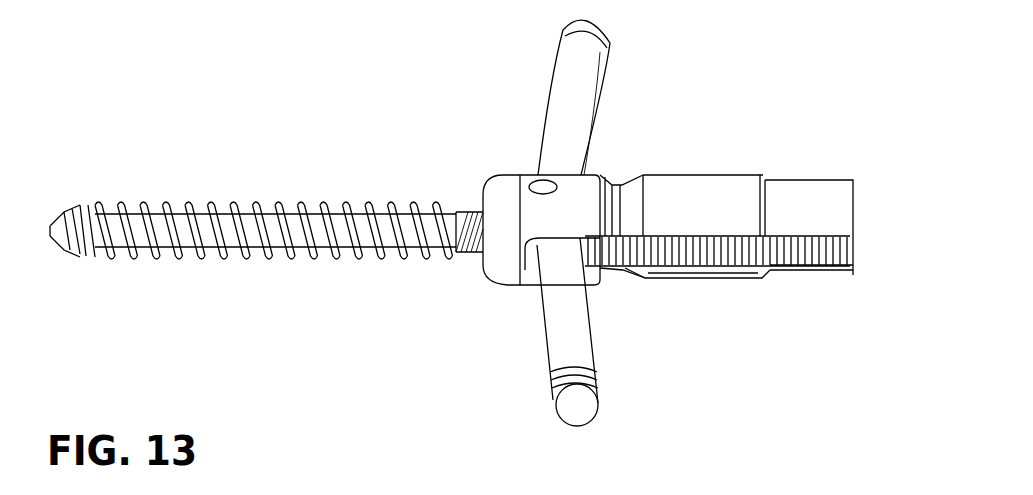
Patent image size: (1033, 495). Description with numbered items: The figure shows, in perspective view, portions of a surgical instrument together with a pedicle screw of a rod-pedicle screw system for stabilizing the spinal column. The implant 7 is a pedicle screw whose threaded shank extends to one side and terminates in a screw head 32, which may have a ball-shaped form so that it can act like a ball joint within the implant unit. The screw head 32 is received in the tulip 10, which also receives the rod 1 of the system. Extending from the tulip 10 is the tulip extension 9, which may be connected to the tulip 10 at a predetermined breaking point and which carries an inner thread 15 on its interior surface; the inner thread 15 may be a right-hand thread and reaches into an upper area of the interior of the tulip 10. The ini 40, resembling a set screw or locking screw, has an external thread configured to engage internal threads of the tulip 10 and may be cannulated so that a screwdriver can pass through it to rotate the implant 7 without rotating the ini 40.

The rod 1 is at (583, 80).
The implant 7 is at (255, 193).
The tulip extension 9 is at (683, 195).
The tulip 10 is at (504, 290).
The inner thread 15 is at (806, 270).
The screw head 32 is at (480, 259).
The ini 40 is at (600, 282).